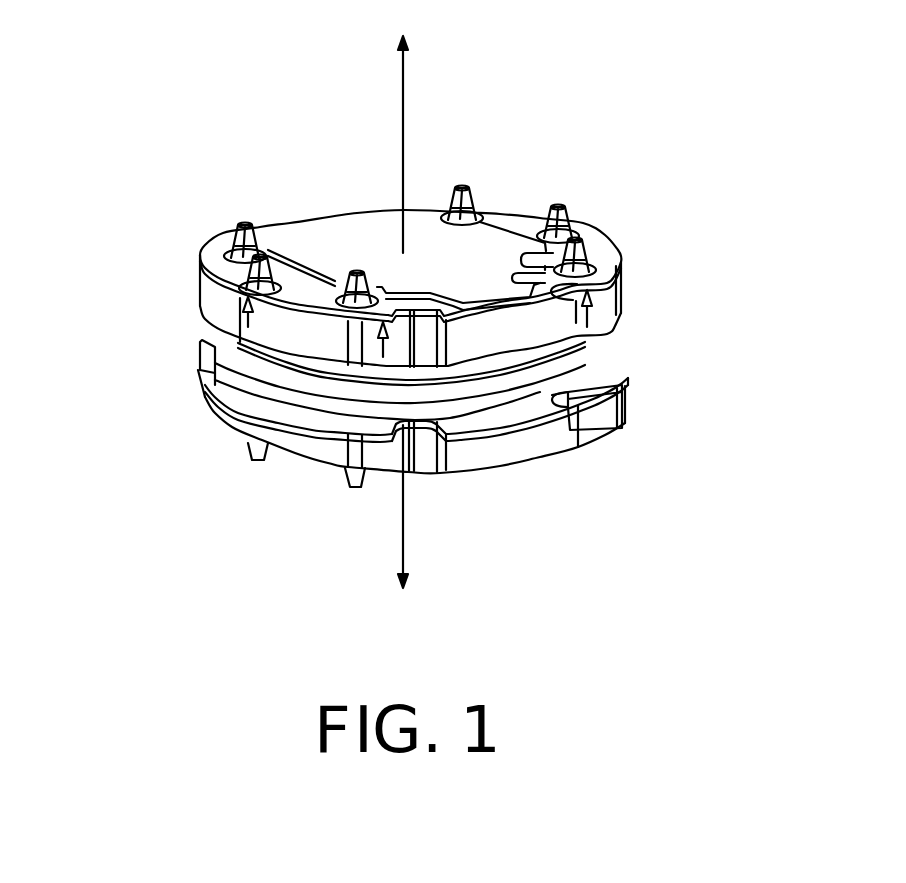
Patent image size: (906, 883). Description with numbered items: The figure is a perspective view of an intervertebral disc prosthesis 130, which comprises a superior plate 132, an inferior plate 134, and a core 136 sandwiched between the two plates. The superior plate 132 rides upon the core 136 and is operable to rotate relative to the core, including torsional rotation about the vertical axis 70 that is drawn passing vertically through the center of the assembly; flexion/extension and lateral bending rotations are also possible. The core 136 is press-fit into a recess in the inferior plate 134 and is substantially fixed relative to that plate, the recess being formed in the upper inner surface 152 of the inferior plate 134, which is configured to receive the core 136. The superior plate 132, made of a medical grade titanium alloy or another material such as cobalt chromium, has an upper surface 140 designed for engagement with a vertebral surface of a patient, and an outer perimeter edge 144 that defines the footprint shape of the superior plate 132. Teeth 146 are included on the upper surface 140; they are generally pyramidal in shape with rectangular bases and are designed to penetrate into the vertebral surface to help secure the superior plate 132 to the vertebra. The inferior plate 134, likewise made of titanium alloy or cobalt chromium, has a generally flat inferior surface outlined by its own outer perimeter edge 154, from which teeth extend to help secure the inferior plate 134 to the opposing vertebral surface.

The vertical axis 70 is at (403, 72).
The intervertebral disc prosthesis 130 is at (273, 192).
The superior plate 132 is at (610, 266).
The inferior plate 134 is at (446, 448).
The core 136 is at (323, 378).
The upper surface 140 is at (338, 245).
The outer perimeter edge 144 is at (605, 242).
The teeth 146 is at (238, 228).
The upper inner surface 152 is at (600, 370).
The outer perimeter edge 154 is at (288, 458).